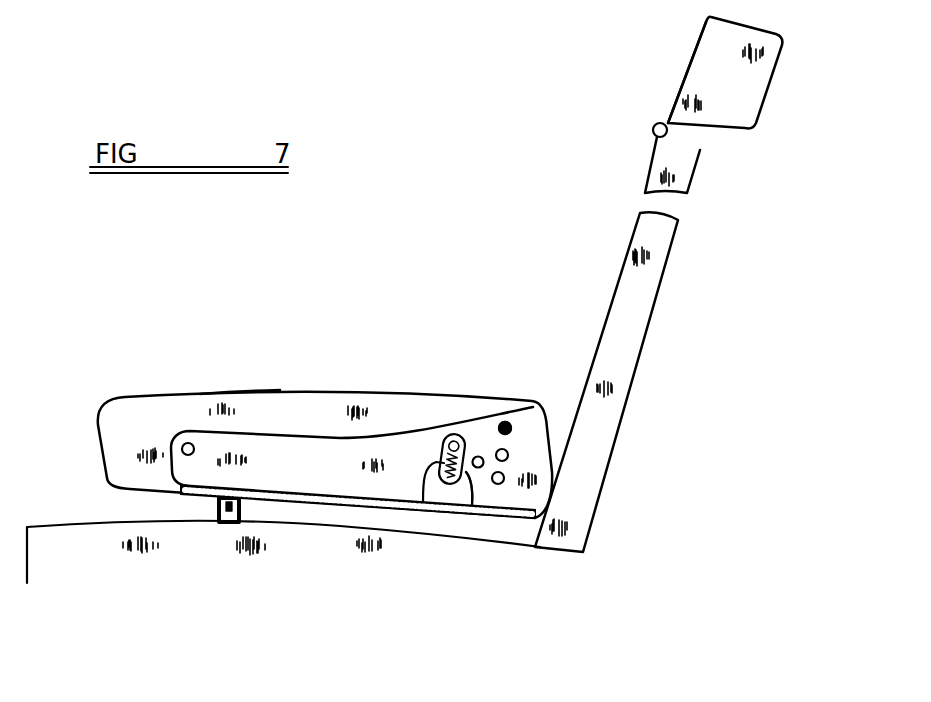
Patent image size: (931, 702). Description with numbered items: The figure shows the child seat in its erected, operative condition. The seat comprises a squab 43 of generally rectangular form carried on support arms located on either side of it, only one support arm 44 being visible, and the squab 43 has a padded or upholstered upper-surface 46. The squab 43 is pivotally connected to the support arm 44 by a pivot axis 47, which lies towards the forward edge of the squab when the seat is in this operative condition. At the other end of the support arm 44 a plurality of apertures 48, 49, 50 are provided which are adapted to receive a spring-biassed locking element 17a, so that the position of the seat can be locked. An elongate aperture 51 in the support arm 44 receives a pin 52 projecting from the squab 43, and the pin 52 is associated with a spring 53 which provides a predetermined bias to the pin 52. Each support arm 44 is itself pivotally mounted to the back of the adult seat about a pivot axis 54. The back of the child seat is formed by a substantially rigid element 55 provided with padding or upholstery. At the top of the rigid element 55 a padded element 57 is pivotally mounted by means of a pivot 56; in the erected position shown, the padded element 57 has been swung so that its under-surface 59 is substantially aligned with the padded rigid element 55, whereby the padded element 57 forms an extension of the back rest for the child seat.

The spring-biassed locking element 17a is at (505, 424).
The squab 43 is at (333, 405).
The support arm 44 is at (315, 467).
The upper-surface 46 is at (236, 392).
The pivot axis 47 is at (190, 456).
The aperture 48 is at (484, 463).
The aperture 49 is at (508, 455).
The aperture 50 is at (510, 430).
The elongate aperture 51 is at (423, 500).
The pin 52 is at (446, 430).
The spring 53 is at (472, 503).
The pivot axis 54 is at (501, 486).
The rigid element 55 is at (624, 285).
The pivot 56 is at (668, 133).
The padded element 57 is at (730, 82).
The under-surface 59 is at (683, 73).